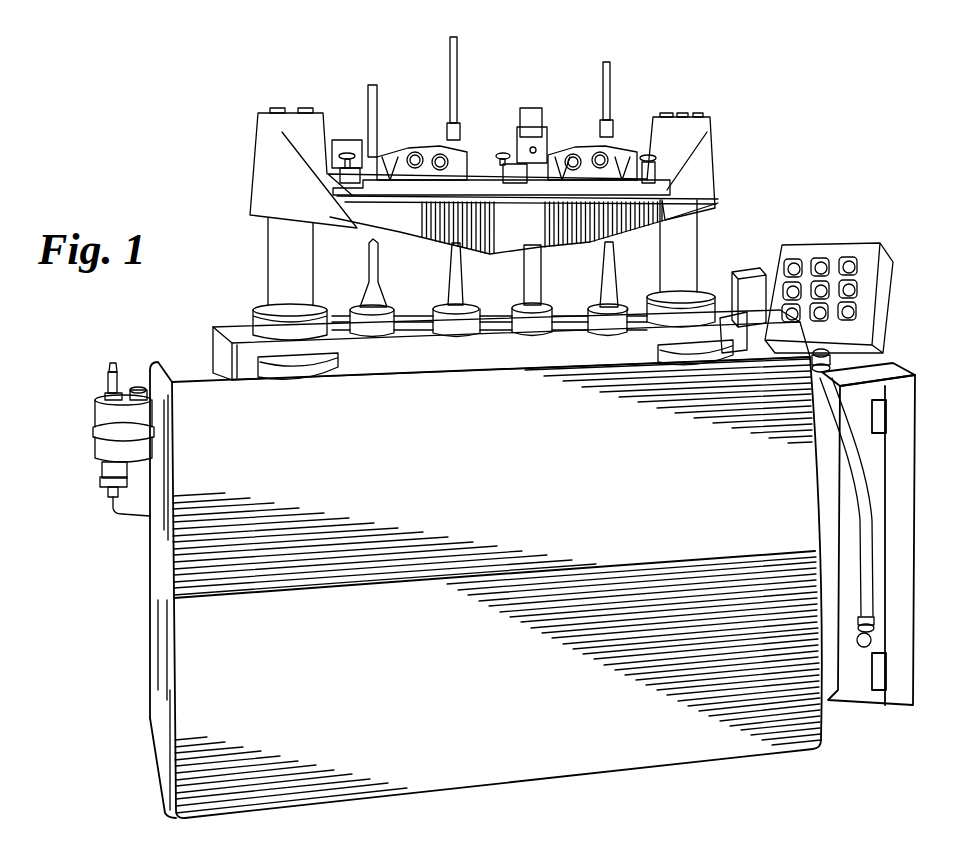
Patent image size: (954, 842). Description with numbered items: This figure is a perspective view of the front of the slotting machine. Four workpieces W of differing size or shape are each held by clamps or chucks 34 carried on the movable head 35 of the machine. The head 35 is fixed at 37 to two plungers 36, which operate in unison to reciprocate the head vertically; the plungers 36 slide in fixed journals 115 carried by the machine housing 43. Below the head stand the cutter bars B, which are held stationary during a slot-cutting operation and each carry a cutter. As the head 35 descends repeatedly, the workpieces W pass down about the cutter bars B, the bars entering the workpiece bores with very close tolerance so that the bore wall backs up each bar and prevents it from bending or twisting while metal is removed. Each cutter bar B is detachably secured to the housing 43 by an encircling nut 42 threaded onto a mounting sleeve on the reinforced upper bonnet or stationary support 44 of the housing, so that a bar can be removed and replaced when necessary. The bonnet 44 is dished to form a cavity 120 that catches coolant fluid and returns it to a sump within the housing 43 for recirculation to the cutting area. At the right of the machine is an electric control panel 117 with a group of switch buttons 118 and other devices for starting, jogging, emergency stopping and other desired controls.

The clamps or chucks 34 is at (367, 145).
The movable head 35 is at (405, 232).
The plungers 36 is at (268, 248).
The head fixing point 37 is at (280, 110).
The encircling nut 42 is at (377, 323).
The machine housing 43 is at (217, 393).
The bonnet or stationary support 44 is at (213, 340).
The fixed journal 115 is at (258, 320).
The electric control panel 117 is at (885, 306).
The switch buttons 118 is at (857, 290).
The cavity 120 is at (498, 320).
The cutter bar B is at (382, 292).
The workpiece W is at (377, 142).